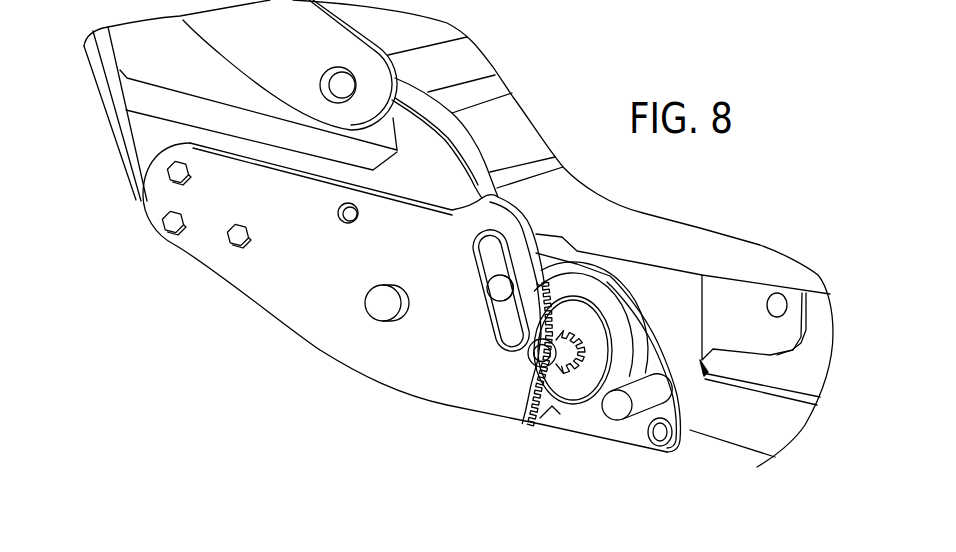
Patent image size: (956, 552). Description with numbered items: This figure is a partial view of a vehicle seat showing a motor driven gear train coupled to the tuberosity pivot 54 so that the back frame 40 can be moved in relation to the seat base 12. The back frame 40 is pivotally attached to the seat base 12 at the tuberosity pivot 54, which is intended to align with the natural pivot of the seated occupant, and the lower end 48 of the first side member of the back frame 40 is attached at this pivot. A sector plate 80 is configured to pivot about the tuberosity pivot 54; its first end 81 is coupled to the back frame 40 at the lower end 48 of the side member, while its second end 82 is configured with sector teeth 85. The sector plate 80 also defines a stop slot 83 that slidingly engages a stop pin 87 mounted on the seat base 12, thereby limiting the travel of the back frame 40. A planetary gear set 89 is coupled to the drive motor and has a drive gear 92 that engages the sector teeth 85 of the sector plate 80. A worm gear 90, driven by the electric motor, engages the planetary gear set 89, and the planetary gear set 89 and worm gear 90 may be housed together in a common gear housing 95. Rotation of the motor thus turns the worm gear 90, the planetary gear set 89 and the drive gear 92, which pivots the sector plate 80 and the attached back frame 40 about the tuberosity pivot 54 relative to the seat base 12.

The seat base 12 is at (717, 250).
The back frame 40 is at (157, 62).
The lower end of first side member 48 is at (130, 192).
The tuberosity pivot 54 is at (380, 310).
The sector plate 80 is at (270, 283).
The first end of sector plate 81 is at (150, 245).
The second end of sector plate 82 is at (512, 432).
The stop slot 83 is at (490, 338).
The sector teeth 85 is at (543, 403).
The stop pin 87 is at (491, 292).
The planetary gear set 89 is at (587, 290).
The worm gear 90 is at (668, 418).
The drive gear 92 is at (573, 335).
The gear housing 95 is at (637, 430).